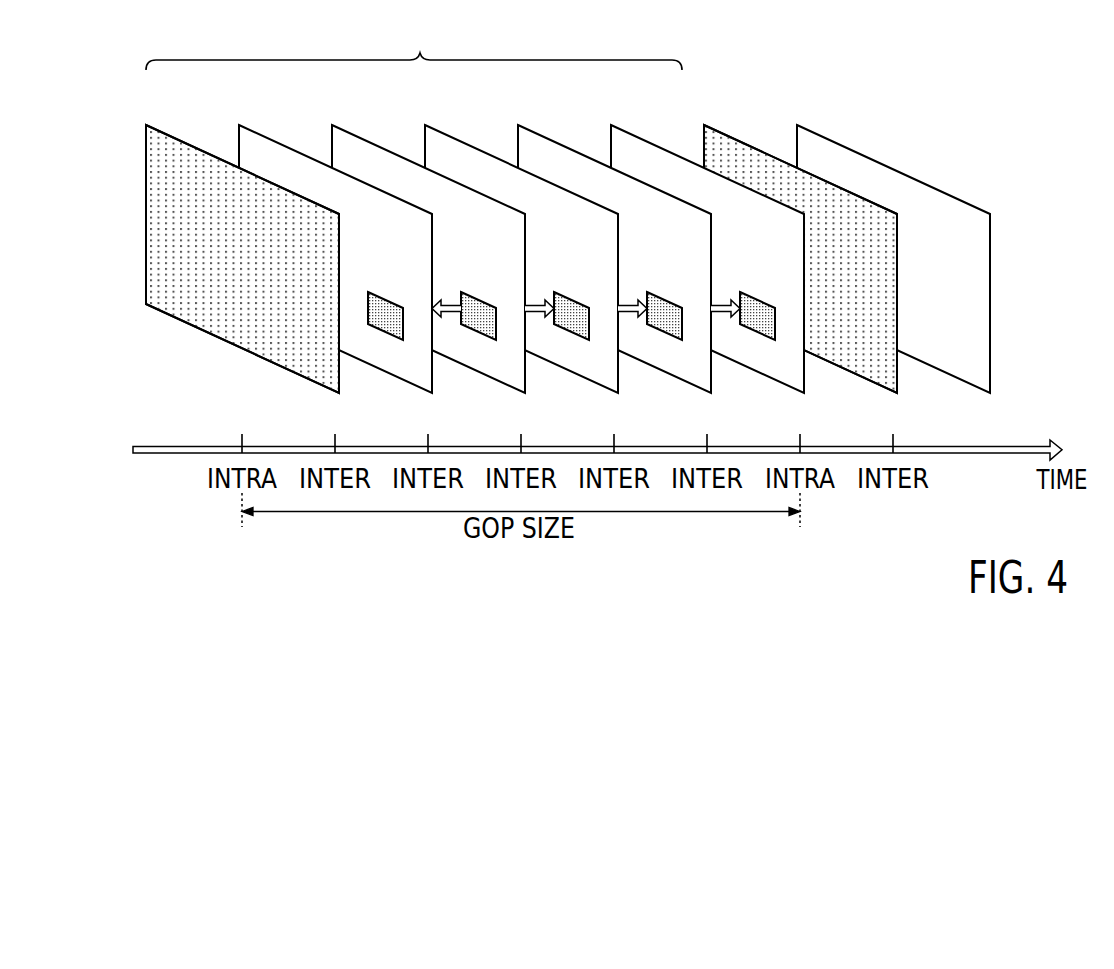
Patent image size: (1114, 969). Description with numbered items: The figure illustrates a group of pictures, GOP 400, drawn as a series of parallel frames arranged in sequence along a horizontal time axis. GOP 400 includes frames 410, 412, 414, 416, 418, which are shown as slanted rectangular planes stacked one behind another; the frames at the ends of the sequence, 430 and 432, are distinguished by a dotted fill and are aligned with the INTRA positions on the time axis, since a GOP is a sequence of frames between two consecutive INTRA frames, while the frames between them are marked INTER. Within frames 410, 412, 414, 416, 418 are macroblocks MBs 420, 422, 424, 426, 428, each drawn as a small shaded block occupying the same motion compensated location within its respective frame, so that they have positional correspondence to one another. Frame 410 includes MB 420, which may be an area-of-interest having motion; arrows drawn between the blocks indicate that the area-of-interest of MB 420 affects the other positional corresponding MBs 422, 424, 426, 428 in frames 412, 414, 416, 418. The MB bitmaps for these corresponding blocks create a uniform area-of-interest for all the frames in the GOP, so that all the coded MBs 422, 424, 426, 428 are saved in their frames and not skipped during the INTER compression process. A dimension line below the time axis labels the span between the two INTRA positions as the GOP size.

The GOP 400 is at (414, 45).
The frame 410 is at (364, 136).
The frame 412 is at (270, 136).
The frame 414 is at (457, 136).
The frame 416 is at (550, 136).
The frame 418 is at (643, 136).
The MB 420 is at (486, 302).
The MB 422 is at (393, 302).
The MB 424 is at (579, 302).
The MB 426 is at (672, 302).
The MB 428 is at (765, 302).
The intra-coded frame 430 is at (179, 136).
The intra-coded frame 432 is at (736, 136).